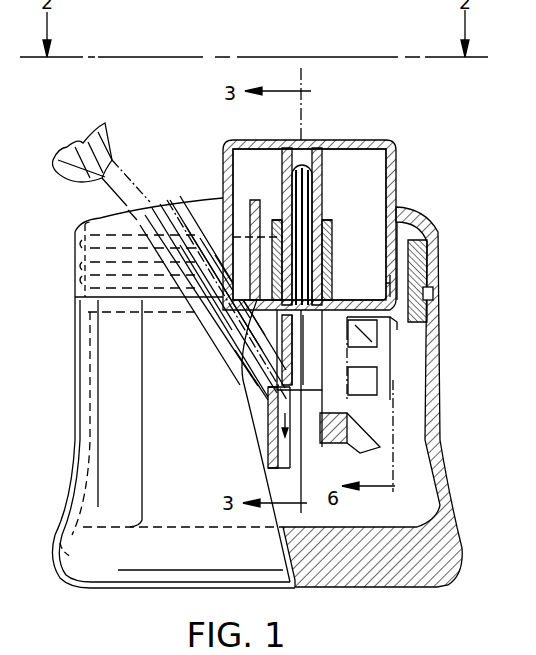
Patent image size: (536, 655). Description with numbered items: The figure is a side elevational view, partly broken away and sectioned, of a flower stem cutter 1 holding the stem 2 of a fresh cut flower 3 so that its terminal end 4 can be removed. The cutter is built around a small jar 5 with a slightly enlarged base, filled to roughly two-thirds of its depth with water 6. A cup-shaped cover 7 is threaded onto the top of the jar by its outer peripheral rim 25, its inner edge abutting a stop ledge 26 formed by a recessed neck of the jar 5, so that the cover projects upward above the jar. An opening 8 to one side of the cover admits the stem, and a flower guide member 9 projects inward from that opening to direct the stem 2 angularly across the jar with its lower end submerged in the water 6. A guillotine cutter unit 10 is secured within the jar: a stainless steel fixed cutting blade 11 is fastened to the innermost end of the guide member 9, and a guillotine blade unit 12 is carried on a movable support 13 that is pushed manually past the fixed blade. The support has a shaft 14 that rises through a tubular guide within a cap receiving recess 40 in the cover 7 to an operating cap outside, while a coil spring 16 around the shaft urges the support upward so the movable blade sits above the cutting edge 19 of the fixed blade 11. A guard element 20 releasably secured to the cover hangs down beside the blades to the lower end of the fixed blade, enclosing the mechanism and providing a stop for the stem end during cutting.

The flower stem cutter 1 is at (416, 168).
The stem 2 is at (233, 365).
The fresh cut flower 3 is at (108, 125).
The terminal end 4 is at (347, 450).
The jar 5 is at (437, 432).
The water 6 is at (410, 413).
The cover 7 is at (435, 218).
The opening 8 is at (187, 213).
The flower guide member 9 is at (227, 350).
The guillotine cutter unit 10 is at (262, 405).
The fixed cutting blade 11 is at (267, 427).
The guillotine blade unit 12 is at (300, 368).
The movable support 13 is at (293, 345).
The shaft 14 is at (309, 181).
The spring 16 is at (318, 234).
The cutting edge 19 is at (267, 383).
The guard element 20 is at (393, 357).
The outer peripheral rim 25 is at (437, 257).
The stop ledge 26 is at (433, 295).
The cap receiving recess 40 is at (395, 261).